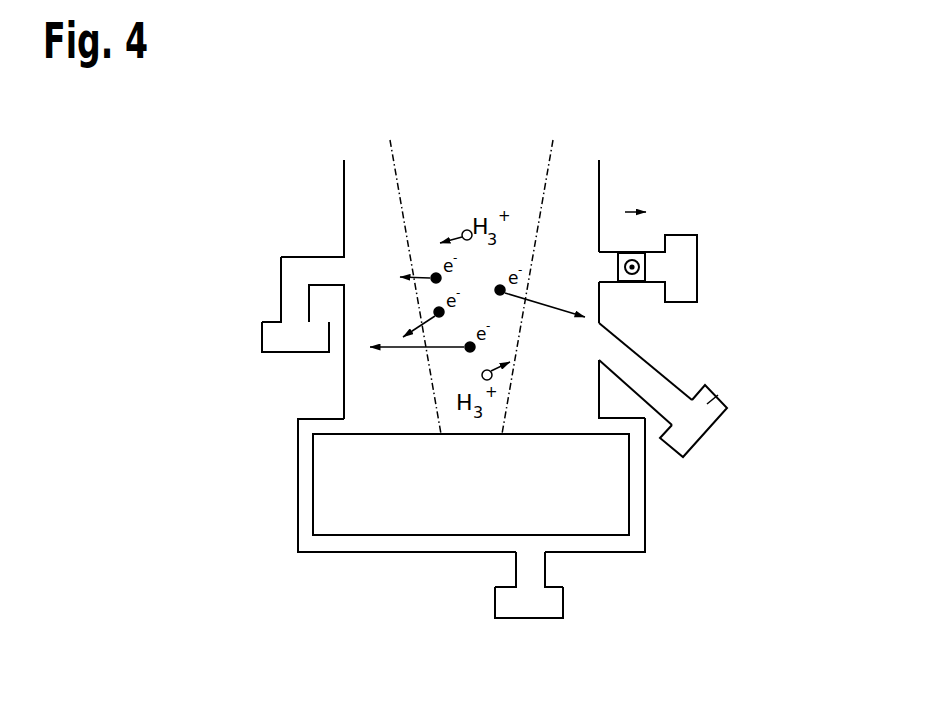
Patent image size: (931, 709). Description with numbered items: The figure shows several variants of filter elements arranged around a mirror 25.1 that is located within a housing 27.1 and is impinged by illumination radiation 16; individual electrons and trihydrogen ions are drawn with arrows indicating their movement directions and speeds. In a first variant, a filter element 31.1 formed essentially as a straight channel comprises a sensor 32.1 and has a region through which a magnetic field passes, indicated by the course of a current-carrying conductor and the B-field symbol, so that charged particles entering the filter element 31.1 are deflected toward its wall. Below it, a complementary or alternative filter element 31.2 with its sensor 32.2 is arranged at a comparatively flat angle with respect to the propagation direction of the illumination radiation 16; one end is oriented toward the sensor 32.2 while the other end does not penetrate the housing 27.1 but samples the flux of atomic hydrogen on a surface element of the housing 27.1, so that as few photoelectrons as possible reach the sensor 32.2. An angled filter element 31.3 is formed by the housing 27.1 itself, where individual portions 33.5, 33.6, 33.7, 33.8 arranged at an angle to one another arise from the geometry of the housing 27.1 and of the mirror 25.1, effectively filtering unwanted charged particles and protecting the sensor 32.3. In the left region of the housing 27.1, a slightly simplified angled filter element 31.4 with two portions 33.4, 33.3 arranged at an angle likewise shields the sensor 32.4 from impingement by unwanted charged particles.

The illumination radiation 16 is at (395, 165).
The mirror 25.1 is at (362, 465).
The housing 27.1 is at (298, 500).
The filter element 31.1 is at (658, 234).
The filter element 31.2 is at (690, 372).
The filter element 31.3 is at (666, 550).
The angled filter element 31.4 is at (266, 283).
The sensor 32.1 is at (687, 268).
The sensor 32.2 is at (707, 405).
The sensor 32.3 is at (552, 599).
The sensor 32.4 is at (297, 347).
The portion 33.3 is at (325, 270).
The portion 33.4 is at (290, 298).
The portion 33.5 is at (617, 427).
The portion 33.6 is at (635, 492).
The portion 33.7 is at (620, 543).
The portion 33.8 is at (523, 570).